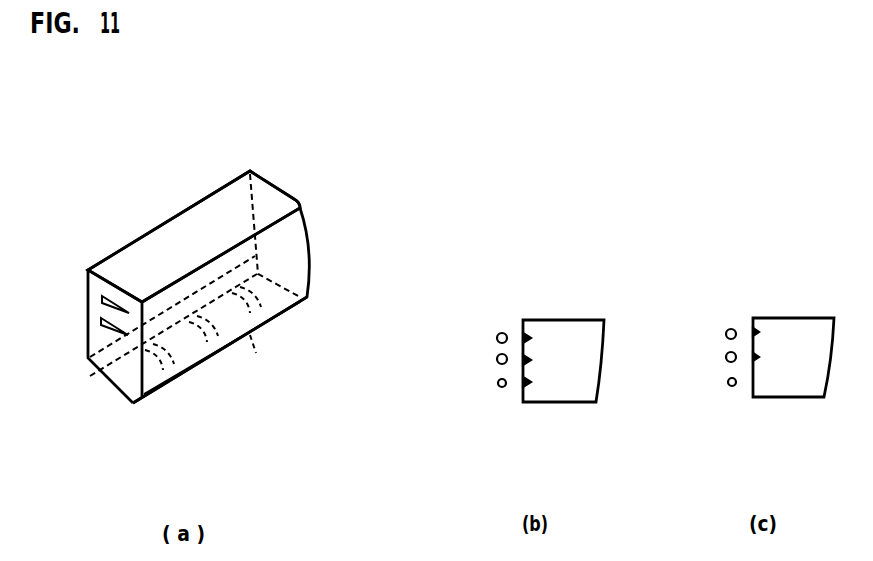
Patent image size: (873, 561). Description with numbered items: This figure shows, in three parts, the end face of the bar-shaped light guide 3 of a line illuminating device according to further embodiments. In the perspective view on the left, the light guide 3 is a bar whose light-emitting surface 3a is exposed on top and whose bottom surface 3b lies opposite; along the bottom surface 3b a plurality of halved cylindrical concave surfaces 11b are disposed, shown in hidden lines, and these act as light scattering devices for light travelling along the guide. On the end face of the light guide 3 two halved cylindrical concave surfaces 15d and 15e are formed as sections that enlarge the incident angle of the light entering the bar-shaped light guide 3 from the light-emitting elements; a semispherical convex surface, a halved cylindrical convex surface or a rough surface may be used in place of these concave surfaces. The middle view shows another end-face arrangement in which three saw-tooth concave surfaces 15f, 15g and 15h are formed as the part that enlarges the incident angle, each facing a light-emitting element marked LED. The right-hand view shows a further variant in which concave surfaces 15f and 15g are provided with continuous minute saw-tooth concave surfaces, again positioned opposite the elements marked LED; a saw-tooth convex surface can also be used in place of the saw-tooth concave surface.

The bar-shaped light guide 3 is at (272, 198).
The light-emitting surface 3a is at (210, 218).
The bottom surface 3b is at (112, 397).
The halved cylindrical concave surface 15d is at (102, 298).
The halved cylindrical concave surface 15e is at (102, 330).
The halved cylindrical concave surfaces 11b is at (173, 390).
The saw-tooth concave surface 15f is at (526, 338).
The saw-tooth concave surface 15g is at (525, 360).
The saw-tooth concave surface 15h is at (526, 382).
The light emitting diode LED is at (500, 388).